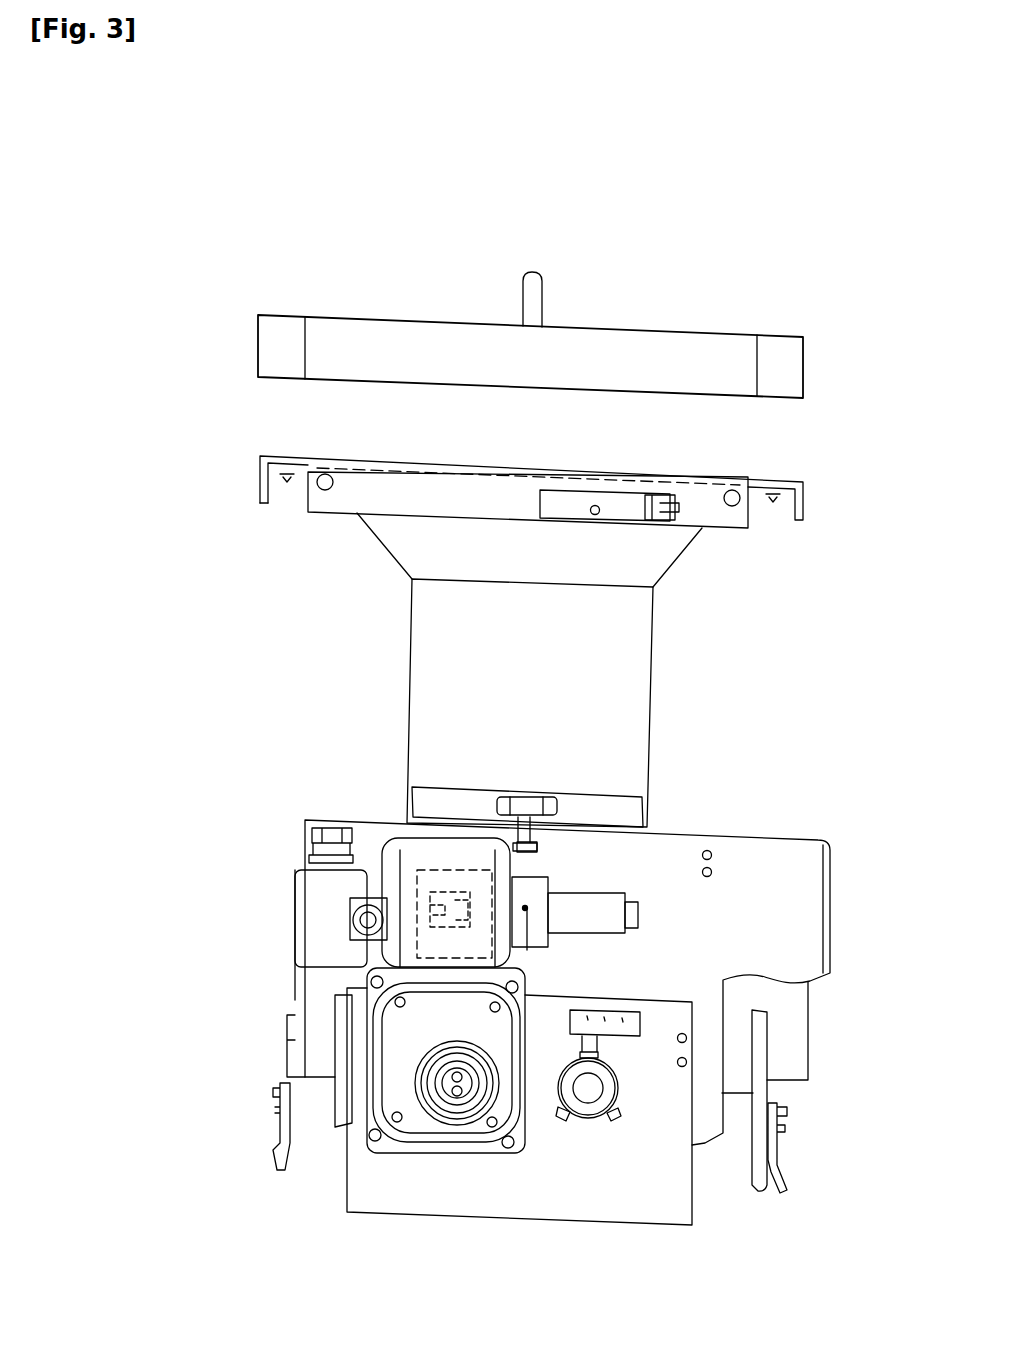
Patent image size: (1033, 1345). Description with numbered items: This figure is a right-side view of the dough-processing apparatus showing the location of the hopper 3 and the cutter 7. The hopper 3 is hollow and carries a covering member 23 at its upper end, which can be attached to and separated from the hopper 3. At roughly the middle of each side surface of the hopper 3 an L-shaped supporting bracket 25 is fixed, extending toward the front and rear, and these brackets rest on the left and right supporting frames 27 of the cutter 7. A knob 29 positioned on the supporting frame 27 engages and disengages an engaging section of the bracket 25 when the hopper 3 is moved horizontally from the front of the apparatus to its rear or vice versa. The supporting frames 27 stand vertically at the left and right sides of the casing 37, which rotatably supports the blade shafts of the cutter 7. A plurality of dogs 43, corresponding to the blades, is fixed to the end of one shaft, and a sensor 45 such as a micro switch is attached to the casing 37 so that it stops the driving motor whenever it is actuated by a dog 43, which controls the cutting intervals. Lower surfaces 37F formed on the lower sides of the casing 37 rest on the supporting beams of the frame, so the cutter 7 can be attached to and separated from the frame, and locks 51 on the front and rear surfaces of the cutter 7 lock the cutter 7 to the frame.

The hopper 3 is at (643, 627).
The cutter 7 is at (350, 1250).
The covering member 23 is at (697, 342).
The supporting bracket 25 is at (595, 802).
The supporting frame 27 is at (740, 850).
The knob 29 is at (525, 797).
The casing 37 is at (468, 1200).
The lower surface 37F is at (307, 1085).
The dog 43 is at (615, 1127).
The sensor 45 is at (613, 1007).
The lock 51 is at (258, 1118).